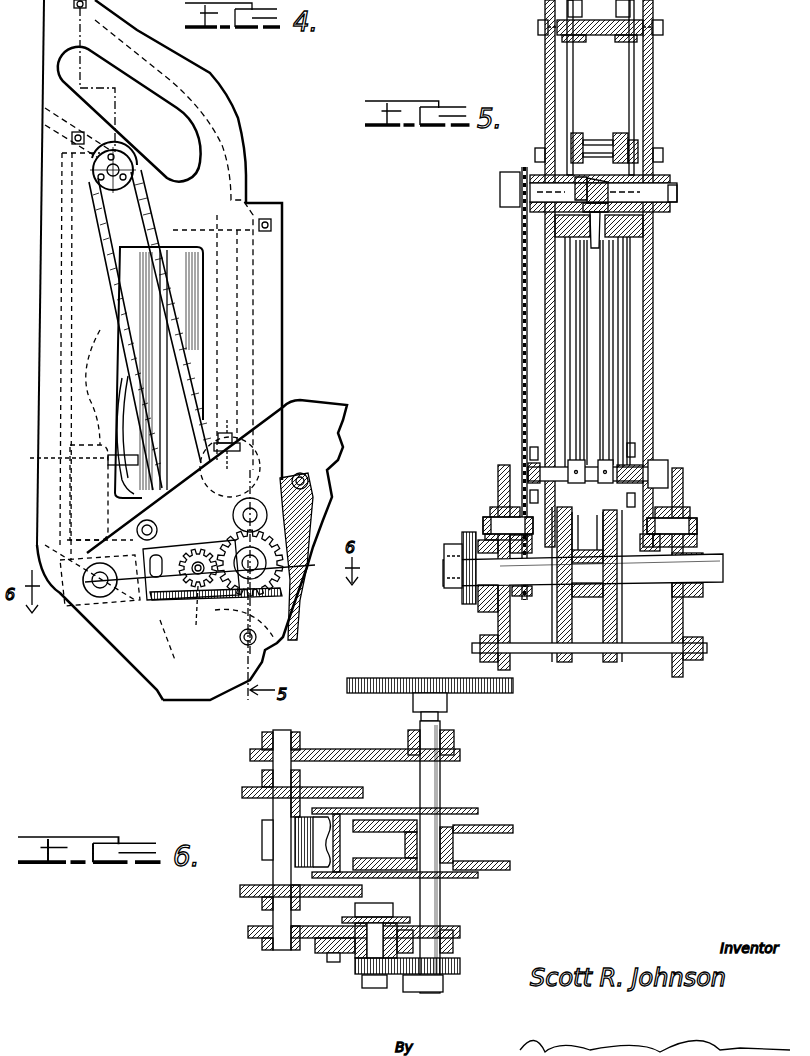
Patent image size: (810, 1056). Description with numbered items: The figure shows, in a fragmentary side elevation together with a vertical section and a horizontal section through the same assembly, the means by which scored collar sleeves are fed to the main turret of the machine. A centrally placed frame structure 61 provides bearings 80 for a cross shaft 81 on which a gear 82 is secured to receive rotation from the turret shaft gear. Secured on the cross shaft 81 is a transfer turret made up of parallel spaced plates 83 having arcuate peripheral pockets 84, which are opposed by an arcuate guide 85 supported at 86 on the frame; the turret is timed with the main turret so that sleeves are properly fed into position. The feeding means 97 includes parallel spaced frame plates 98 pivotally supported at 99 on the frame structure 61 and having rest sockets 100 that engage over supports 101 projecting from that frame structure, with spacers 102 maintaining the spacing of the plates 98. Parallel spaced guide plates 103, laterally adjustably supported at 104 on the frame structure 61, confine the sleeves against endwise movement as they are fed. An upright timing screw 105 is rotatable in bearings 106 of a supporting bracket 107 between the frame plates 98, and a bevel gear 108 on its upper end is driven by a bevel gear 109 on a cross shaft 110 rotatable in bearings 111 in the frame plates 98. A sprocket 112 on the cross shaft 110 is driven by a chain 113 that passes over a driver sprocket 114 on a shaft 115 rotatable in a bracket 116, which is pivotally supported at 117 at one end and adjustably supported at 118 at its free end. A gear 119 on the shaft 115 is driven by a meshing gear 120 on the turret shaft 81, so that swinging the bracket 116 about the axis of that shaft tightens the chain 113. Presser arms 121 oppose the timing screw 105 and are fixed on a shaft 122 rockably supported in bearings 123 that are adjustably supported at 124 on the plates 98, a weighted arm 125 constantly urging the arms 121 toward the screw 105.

In FIG. 4, the frame structure 61 is at (325, 406).
In FIG. 5, the frame structure 61 is at (502, 623).
In FIG. 6, the frame structure 61 is at (372, 749).
In FIG. 5, the bearings 80 is at (487, 540).
In FIG. 6, the bearings 80 is at (454, 742).
In FIG. 4, the cross shaft 81 is at (253, 563).
In FIG. 5, the cross shaft 81 is at (719, 568).
In FIG. 6, the cross shaft 81 is at (440, 783).
In FIG. 6, the gear 82 is at (390, 677).
In FIG. 4, the transfer turret plates 83 is at (338, 505).
In FIG. 5, the transfer turret plates 83 is at (558, 662).
In FIG. 6, the transfer turret plates 83 is at (500, 861).
In FIG. 4, the arcuate peripheral pockets 84 is at (297, 632).
In FIG. 5, the arcuate peripheral pockets 84 is at (605, 527).
In FIG. 6, the arcuate peripheral pockets 84 is at (373, 858).
In FIG. 4, the arcuate guide 85 is at (160, 682).
In FIG. 6, the arcuate guide 85 is at (313, 848).
In FIG. 4, the support for arcuate guide 86 is at (85, 617).
In FIG. 4, the feeding means 97 is at (258, 157).
In FIG. 5, the feeding means 97 is at (663, 102).
In FIG. 4, the frame plates 98 is at (270, 278).
In FIG. 5, the frame plates 98 is at (572, 62).
In FIG. 6, the frame plates 98 is at (258, 786).
In FIG. 4, the pivotal support 99 is at (97, 583).
In FIG. 6, the pivotal support 99 is at (273, 800).
In FIG. 4, the rest sockets 100 is at (335, 470).
In FIG. 5, the rest sockets 100 is at (527, 540).
In FIG. 4, the supports 101 is at (252, 497).
In FIG. 5, the supports 101 is at (495, 522).
In FIG. 5, the spacers 102 is at (595, 30).
In FIG. 4, the guide plates 103 is at (193, 325).
In FIG. 5, the guide plates 103 is at (612, 655).
In FIG. 6, the guide plates 103 is at (337, 814).
In FIG. 4, the lateral adjustable support 104 is at (240, 643).
In FIG. 5, the lateral adjustable support 104 is at (478, 650).
In FIG. 4, the timing screw 105 is at (117, 372).
In FIG. 5, the timing screw 105 is at (590, 240).
In FIG. 4, the bearings 106 is at (45, 546).
In FIG. 5, the bearings 106 is at (582, 222).
In FIG. 4, the supporting bracket 107 is at (63, 263).
In FIG. 5, the supporting bracket 107 is at (557, 313).
In FIG. 5, the bevel gear 108 is at (633, 220).
In FIG. 5, the bevel gear 109 is at (625, 177).
In FIG. 5, the cross shaft 110 is at (677, 192).
In FIG. 5, the bearings 111 is at (537, 205).
In FIG. 4, the sprocket 112 is at (128, 171).
In FIG. 4, the chain 113 is at (102, 231).
In FIG. 5, the chain 113 is at (522, 355).
In FIG. 4, the driver sprocket 114 is at (212, 556).
In FIG. 6, the driver sprocket 114 is at (393, 910).
In FIG. 4, the shaft 115 is at (200, 603).
In FIG. 6, the shaft 115 is at (368, 950).
In FIG. 4, the bracket 116 is at (165, 605).
In FIG. 5, the bracket 116 is at (480, 608).
In FIG. 6, the bracket 116 is at (398, 978).
In FIG. 6, the pivotal support 117 is at (453, 945).
In FIG. 4, the adjustable support 118 is at (148, 607).
In FIG. 6, the adjustable support 118 is at (323, 958).
In FIG. 4, the gear 119 is at (213, 626).
In FIG. 6, the gear 119 is at (360, 985).
In FIG. 4, the gear 120 is at (277, 590).
In FIG. 5, the gear 120 is at (462, 565).
In FIG. 6, the gear 120 is at (460, 972).
In FIG. 4, the presser arms 121 is at (227, 257).
In FIG. 5, the presser arms 121 is at (590, 288).
In FIG. 5, the shaft 122 is at (595, 468).
In FIG. 4, the bearings 123 is at (270, 428).
In FIG. 5, the bearings 123 is at (650, 458).
In FIG. 4, the adjustable support 124 is at (227, 405).
In FIG. 5, the adjustable support 124 is at (608, 465).
In FIG. 4, the weighted arm 125 is at (38, 502).